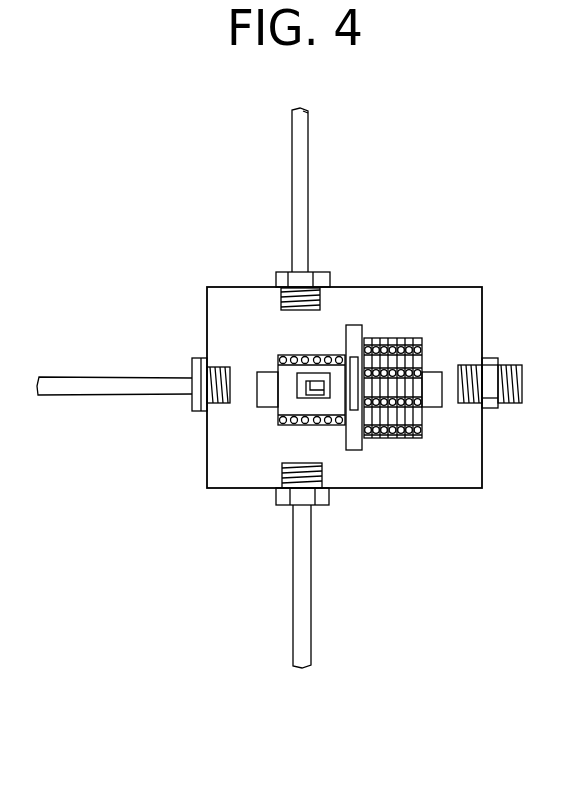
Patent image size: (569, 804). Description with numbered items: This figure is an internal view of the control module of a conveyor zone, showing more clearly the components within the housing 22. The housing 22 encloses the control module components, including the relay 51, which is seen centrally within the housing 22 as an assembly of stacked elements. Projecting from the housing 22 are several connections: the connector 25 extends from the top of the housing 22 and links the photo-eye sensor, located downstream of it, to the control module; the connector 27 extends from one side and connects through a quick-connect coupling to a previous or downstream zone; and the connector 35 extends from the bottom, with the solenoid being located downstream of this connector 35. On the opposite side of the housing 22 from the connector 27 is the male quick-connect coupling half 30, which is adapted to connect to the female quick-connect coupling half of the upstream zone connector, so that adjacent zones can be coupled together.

The housing 22 is at (388, 287).
The connector 25 is at (310, 158).
The connector 27 is at (80, 395).
The male quick-connect coupling half 30 is at (503, 405).
The connector 35 is at (310, 602).
The relay 51 is at (407, 463).